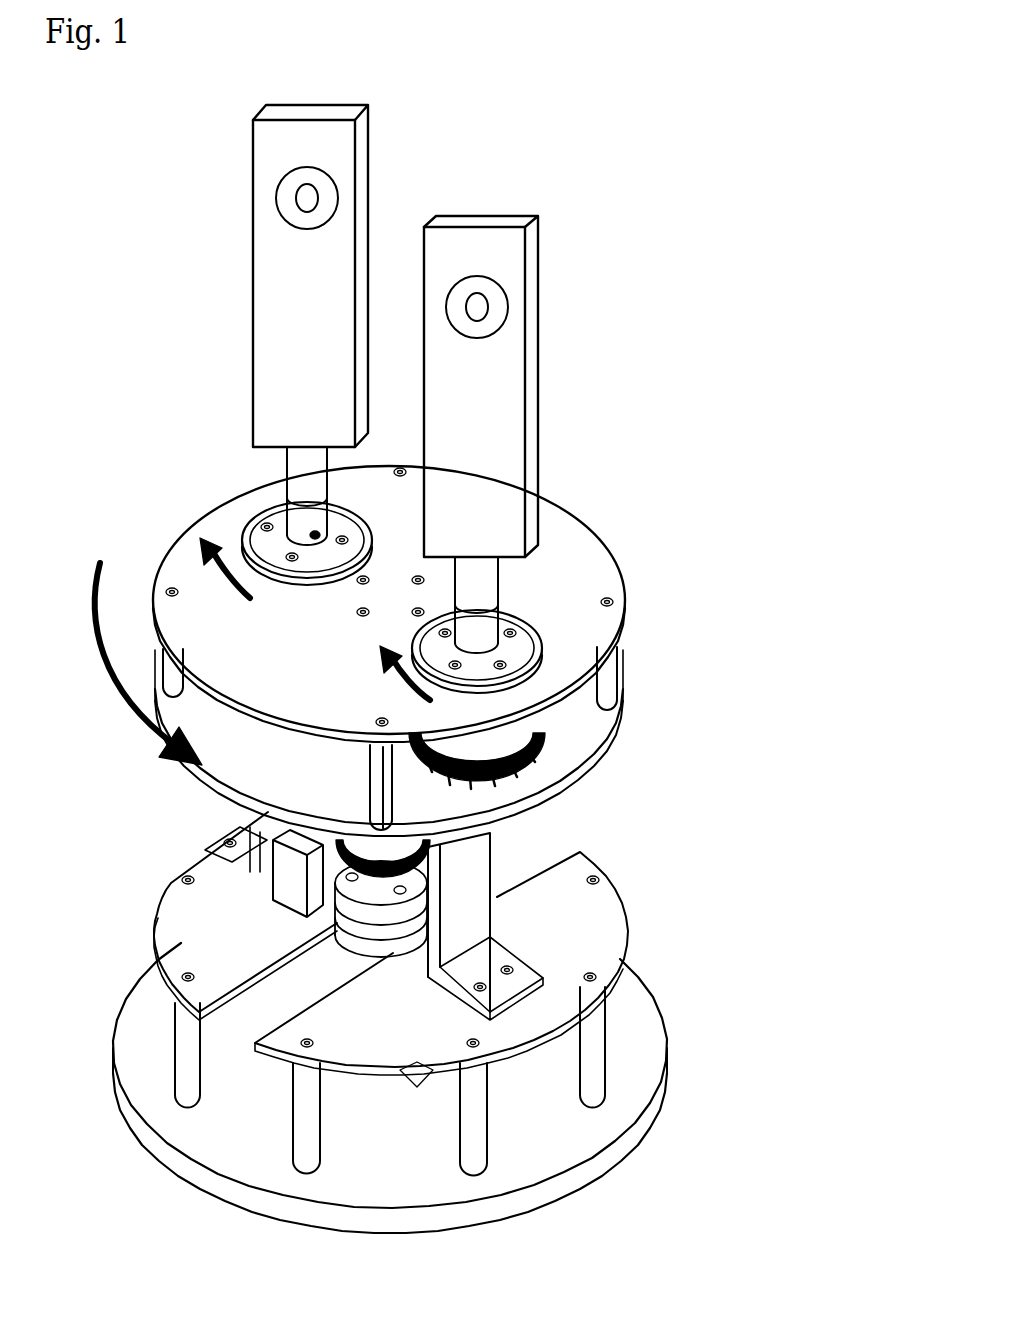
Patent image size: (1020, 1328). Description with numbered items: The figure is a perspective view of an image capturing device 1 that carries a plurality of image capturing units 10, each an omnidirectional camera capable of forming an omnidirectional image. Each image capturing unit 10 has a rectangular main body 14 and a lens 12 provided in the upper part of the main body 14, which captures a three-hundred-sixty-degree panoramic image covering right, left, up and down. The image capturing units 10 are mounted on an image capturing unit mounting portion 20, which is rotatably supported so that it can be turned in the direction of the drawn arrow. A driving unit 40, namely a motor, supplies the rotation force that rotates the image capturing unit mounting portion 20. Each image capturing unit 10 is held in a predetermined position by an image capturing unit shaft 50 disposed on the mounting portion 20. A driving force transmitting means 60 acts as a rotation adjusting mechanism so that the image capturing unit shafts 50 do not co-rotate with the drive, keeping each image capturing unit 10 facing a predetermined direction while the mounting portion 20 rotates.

The image capturing device 1 is at (682, 187).
The image capturing unit 10 is at (327, 158).
The lens 12 is at (487, 310).
The main body 14 is at (500, 447).
The image capturing unit mounting portion 20 is at (580, 585).
The driving unit (motor) 40 is at (500, 903).
The image capturing unit shaft 50 is at (300, 474).
The driving force transmitting means 60 is at (545, 748).